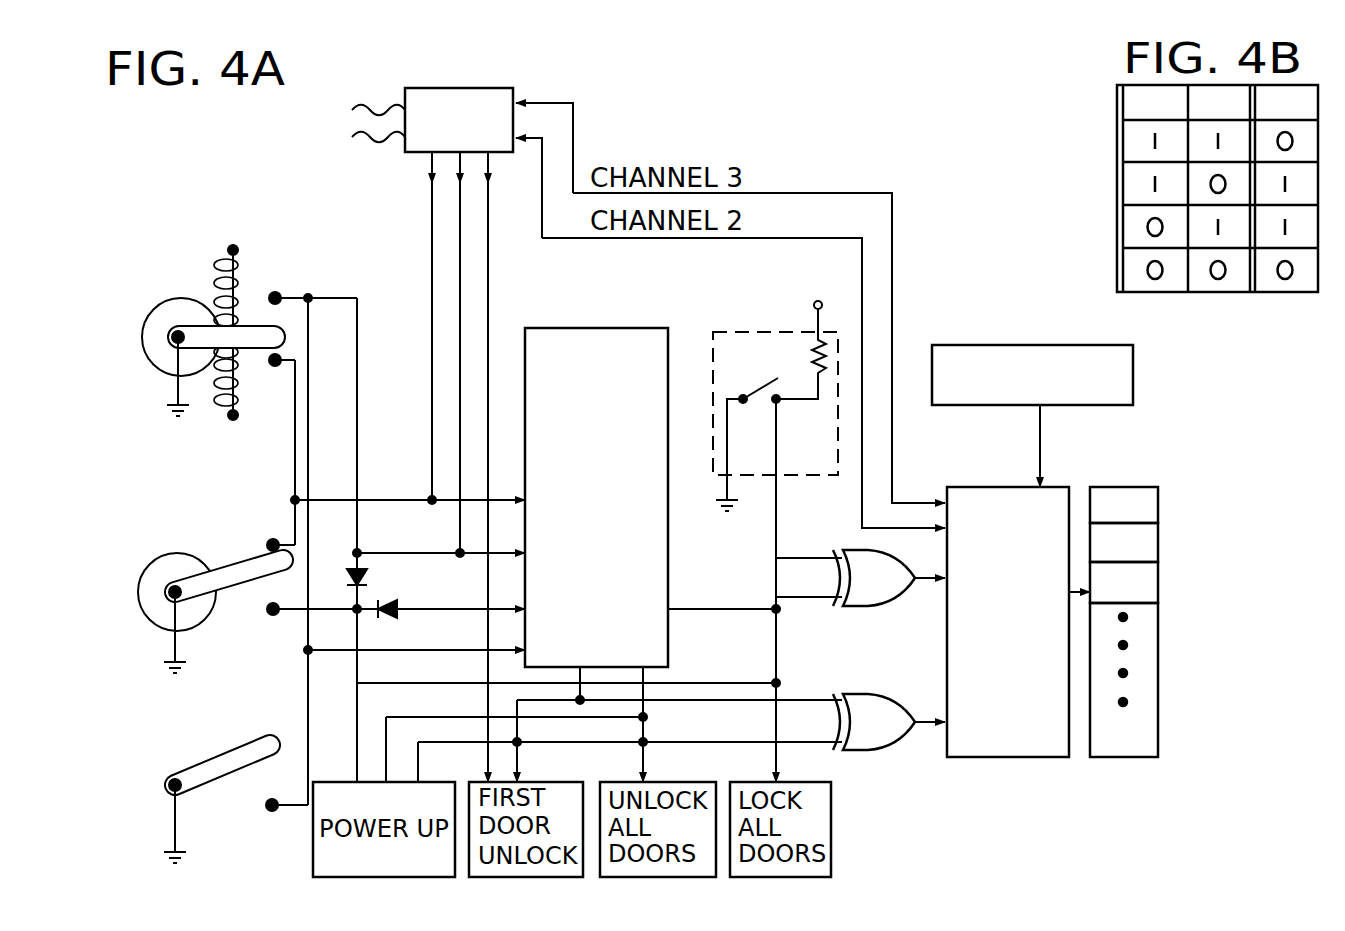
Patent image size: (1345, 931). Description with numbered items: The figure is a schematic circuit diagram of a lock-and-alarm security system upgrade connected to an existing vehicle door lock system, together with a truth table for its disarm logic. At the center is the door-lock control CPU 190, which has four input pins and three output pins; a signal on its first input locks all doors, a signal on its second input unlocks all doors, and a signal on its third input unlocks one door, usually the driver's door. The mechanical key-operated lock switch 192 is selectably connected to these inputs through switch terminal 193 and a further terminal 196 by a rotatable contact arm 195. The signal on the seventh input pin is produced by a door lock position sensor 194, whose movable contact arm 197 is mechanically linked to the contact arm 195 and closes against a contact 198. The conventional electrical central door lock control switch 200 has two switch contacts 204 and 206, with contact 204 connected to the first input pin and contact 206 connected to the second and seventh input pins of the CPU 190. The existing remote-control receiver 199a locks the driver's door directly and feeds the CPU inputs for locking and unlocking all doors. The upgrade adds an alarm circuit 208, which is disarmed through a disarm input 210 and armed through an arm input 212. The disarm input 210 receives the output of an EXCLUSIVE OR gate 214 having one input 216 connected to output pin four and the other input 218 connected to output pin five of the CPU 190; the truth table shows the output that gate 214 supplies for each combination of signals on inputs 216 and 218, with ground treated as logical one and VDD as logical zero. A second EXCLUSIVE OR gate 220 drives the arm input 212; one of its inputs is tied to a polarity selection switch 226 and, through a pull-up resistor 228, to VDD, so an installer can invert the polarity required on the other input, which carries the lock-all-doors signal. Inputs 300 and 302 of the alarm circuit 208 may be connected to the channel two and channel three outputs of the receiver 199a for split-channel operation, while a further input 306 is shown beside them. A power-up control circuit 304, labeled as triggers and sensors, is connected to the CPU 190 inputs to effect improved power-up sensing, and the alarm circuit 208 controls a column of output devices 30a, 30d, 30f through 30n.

In FIG. 4A, the door-lock control CPU 190 is at (600, 328).
In FIG. 4A, the mechanical key-operated lock switch 192 is at (180, 594).
In FIG. 4A, the switch terminal 193 is at (270, 543).
In FIG. 4A, the door lock position sensor 194 is at (177, 793).
In FIG. 4A, the rotatable contact arm 195 is at (221, 574).
In FIG. 4A, the switch contact 196 is at (271, 614).
In FIG. 4A, the movable contact arm 197 is at (212, 766).
In FIG. 4A, the switch contact 198 is at (272, 812).
In FIG. 4A, the remote-control receiver 199a is at (428, 132).
In FIG. 4A, the central door lock control switch 200 is at (137, 330).
In FIG. 4A, the switch contact 204 is at (276, 368).
In FIG. 4A, the switch contact 206 is at (278, 291).
In FIG. 4A, the alarm circuit 208 is at (983, 645).
In FIG. 4A, the disarm input 210 is at (956, 726).
In FIG. 4B, the disarm input 210 is at (1286, 183).
In FIG. 4A, the arm input 212 is at (956, 579).
In FIG. 4A, the EXCLUSIVE OR gate 214 is at (854, 736).
In FIG. 4A, the gate input 216 is at (592, 684).
In FIG. 4B, the gate input 216 is at (1155, 183).
In FIG. 4A, the gate input 218 is at (630, 729).
In FIG. 4B, the gate input 218 is at (1220, 183).
In FIG. 4A, the second EXCLUSIVE OR gate 220 is at (858, 592).
In FIG. 4A, the polarity selection switch 226 is at (730, 367).
In FIG. 4A, the pull-up resistor 228 is at (814, 340).
In FIG. 4A, the alarm circuit input 300 is at (771, 391).
In FIG. 4A, the alarm circuit input 302 is at (785, 356).
In FIG. 4A, the power-up control circuit 304 is at (1135, 373).
In FIG. 4A, the input 306 is at (1040, 504).
In FIG. 4A, the device 30a is at (1124, 505).
In FIG. 4A, the device 30d is at (1124, 542).
In FIG. 4A, the device 30f is at (1124, 582).
In FIG. 4A, the device 30n is at (1124, 680).